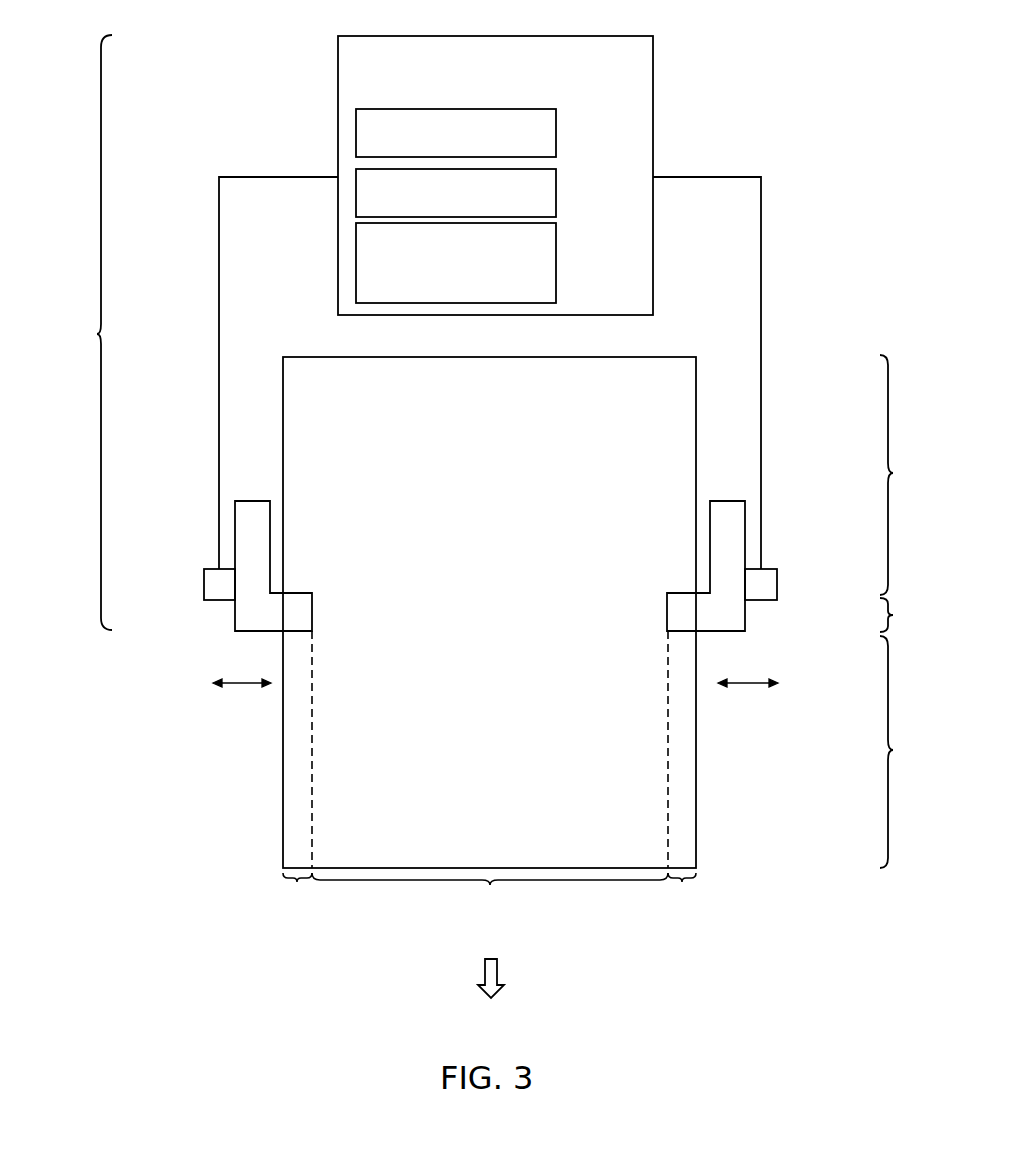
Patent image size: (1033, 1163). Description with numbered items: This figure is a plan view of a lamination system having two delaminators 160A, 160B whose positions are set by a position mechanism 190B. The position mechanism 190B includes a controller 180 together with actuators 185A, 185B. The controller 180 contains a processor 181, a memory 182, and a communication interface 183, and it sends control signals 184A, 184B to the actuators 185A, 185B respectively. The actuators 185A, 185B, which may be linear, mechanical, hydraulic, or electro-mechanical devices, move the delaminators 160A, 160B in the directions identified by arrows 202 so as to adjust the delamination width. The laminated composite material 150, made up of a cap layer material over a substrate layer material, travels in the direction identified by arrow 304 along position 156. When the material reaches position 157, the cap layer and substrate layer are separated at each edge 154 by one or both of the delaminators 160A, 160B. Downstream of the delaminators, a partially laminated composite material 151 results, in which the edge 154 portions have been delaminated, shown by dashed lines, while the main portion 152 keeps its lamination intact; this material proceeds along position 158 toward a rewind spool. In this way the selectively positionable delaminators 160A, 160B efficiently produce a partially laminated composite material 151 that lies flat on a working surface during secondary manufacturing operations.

The controller 180 is at (653, 65).
The processor 181 is at (556, 134).
The memory 182 is at (556, 193).
The communication interface 183 is at (556, 263).
The control signal 184A is at (245, 177).
The control signal 184B is at (761, 240).
The actuator 185A is at (204, 585).
The actuator 185B is at (777, 585).
The position mechanism 190B is at (71, 332).
The laminated composite material 150 is at (437, 482).
The partially laminated composite material 151 is at (498, 756).
The main portion 152 is at (490, 896).
The edge 154 is at (496, 896).
The position 156 is at (914, 475).
The position 157 is at (914, 615).
The position 158 is at (915, 752).
The delaminator 160A is at (250, 501).
The delaminator 160B is at (727, 501).
The arrows 202 is at (240, 683).
The arrow 304 is at (497, 969).